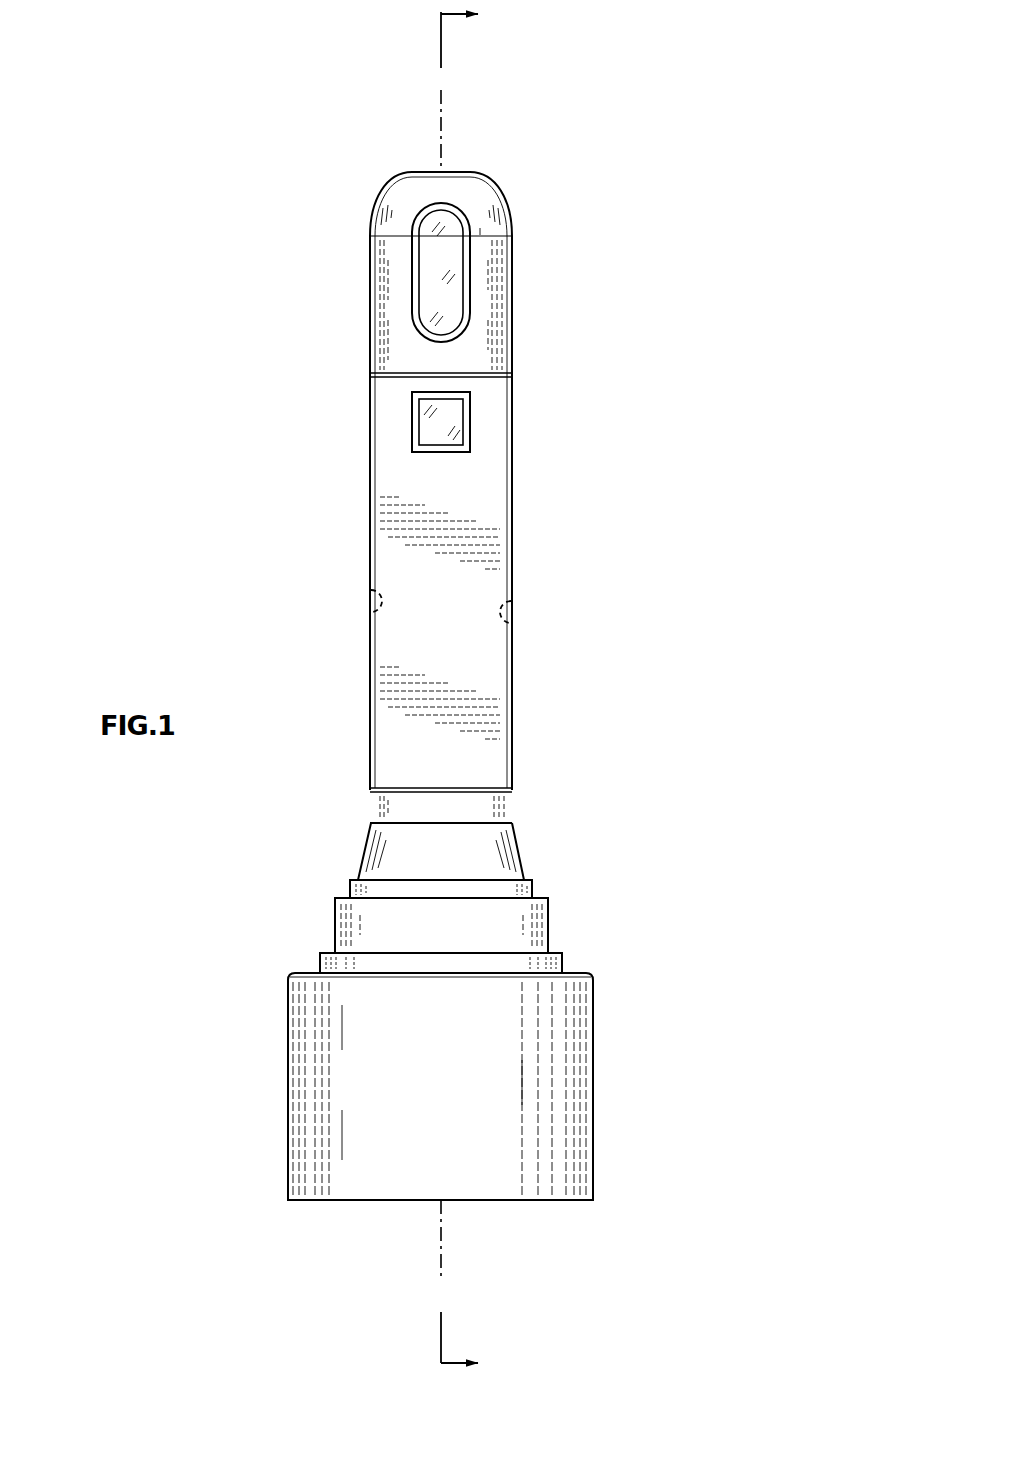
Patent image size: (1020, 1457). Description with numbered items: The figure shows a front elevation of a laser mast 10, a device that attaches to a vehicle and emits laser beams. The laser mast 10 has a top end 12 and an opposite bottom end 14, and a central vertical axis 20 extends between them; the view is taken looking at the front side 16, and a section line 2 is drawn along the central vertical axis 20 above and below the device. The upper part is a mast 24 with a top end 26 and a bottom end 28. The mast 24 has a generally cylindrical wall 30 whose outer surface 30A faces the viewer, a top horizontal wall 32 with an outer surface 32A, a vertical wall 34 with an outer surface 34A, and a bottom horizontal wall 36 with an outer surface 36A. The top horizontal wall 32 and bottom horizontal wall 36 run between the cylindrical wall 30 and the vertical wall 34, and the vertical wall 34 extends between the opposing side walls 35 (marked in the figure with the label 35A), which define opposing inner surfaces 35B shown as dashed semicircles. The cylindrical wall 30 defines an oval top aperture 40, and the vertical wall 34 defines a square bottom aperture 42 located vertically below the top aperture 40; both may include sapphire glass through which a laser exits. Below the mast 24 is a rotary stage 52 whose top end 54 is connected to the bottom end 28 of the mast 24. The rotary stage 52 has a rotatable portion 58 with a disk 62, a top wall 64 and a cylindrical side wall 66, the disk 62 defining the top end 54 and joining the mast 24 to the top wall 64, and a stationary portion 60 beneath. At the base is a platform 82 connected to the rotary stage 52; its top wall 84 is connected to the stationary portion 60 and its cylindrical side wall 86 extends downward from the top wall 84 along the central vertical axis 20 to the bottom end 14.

The section line 2- 2 is at (476, 691).
The laser mast 10 is at (454, 685).
The top end 12 is at (404, 161).
The bottom end 14 is at (352, 1249).
The front side 16 is at (407, 439).
The central vertical axis 20 is at (476, 685).
The mast 24 is at (364, 438).
The top end 26 is at (404, 161).
The bottom end 28 is at (510, 838).
The cylindrical wall 30 is at (364, 438).
The outer surface 30A is at (364, 438).
The top horizontal wall 32 is at (542, 390).
The outer surface 32A is at (542, 390).
The vertical wall 34 is at (440, 618).
The outer surface 34A is at (440, 618).
The opposing side walls 35 is at (440, 618).
The side wall outer surface 35A is at (440, 618).
The opposing inner surfaces 35B is at (444, 609).
The bottom horizontal wall 36 is at (516, 818).
The outer surface 36A is at (516, 818).
The top aperture 40 is at (500, 272).
The bottom aperture 42 is at (500, 419).
The rotary stage 52 is at (411, 880).
The top end 54 is at (343, 849).
The rotatable portion 58 is at (425, 925).
The stationary portion 60 is at (383, 955).
The disk 62 is at (384, 842).
The top wall 64 is at (384, 842).
The cylindrical side wall 66 is at (425, 925).
The platform 82 is at (404, 1069).
The top wall 84 is at (483, 1069).
The cylindrical side wall 86 is at (404, 1069).